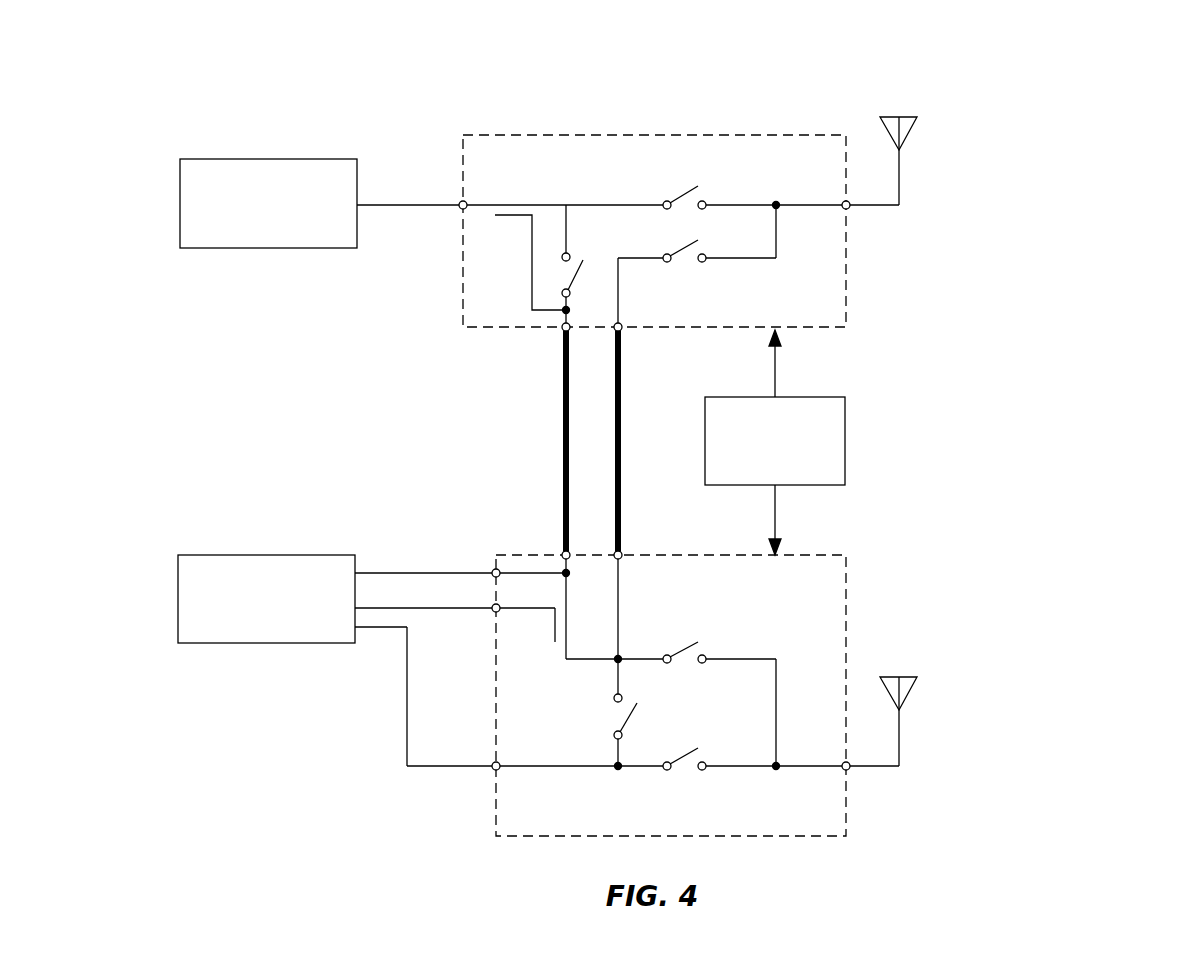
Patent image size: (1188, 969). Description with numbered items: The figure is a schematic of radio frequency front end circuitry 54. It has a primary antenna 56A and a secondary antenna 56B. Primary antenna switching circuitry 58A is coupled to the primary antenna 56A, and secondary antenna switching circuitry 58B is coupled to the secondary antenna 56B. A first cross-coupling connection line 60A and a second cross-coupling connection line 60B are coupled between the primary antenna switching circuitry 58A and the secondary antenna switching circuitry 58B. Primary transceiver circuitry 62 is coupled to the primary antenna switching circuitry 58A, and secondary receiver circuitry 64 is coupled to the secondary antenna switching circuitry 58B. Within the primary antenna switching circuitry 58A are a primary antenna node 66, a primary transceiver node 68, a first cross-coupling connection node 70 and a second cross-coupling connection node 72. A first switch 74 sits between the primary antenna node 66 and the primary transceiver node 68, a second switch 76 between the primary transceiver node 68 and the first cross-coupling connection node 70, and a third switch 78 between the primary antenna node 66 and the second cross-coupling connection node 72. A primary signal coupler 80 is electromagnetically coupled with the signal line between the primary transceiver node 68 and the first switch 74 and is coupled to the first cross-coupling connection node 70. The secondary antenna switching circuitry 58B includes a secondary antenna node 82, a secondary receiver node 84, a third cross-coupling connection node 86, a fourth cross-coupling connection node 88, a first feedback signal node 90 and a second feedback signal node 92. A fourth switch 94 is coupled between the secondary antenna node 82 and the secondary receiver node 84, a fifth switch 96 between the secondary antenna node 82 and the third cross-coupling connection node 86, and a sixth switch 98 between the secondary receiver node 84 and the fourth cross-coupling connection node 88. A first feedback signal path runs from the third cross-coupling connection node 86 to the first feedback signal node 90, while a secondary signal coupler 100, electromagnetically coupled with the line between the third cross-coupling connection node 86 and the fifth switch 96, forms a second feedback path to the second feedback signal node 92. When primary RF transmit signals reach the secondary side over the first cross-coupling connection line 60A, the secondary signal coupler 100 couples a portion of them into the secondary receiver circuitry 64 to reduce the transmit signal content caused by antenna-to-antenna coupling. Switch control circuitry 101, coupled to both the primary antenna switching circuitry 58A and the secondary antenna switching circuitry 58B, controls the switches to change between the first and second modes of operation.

The RF front end circuitry 54 is at (1064, 55).
The primary antenna 56A is at (905, 115).
The secondary antenna 56B is at (906, 676).
The primary antenna switching circuitry 58A is at (654, 231).
The secondary antenna switching circuitry 58B is at (671, 695).
The first cross-coupling connection line 60A is at (562, 437).
The second cross-coupling connection line 60B is at (622, 438).
The primary transceiver circuitry 62 is at (268, 203).
The secondary receiver circuitry 64 is at (266, 599).
The primary antenna node 66 is at (849, 208).
The primary transceiver node 68 is at (460, 208).
The first cross-coupling connection node 70 is at (562, 329).
The second cross-coupling connection node 72 is at (622, 329).
The first switch 74 is at (676, 172).
The second switch 76 is at (580, 243).
The third switch 78 is at (694, 276).
The primary signal coupler 80 is at (507, 234).
The secondary antenna node 82 is at (849, 770).
The secondary receiver node 84 is at (494, 770).
The third cross-coupling connection node 86 is at (562, 555).
The fourth cross-coupling connection node 88 is at (622, 555).
The first feedback signal node 90 is at (494, 569).
The second feedback signal node 92 is at (494, 612).
The fourth switch 94 is at (687, 784).
The fifth switch 96 is at (700, 625).
The sixth switch 98 is at (654, 712).
The secondary signal coupler 100 is at (542, 638).
The switch control circuitry 101 is at (775, 442).